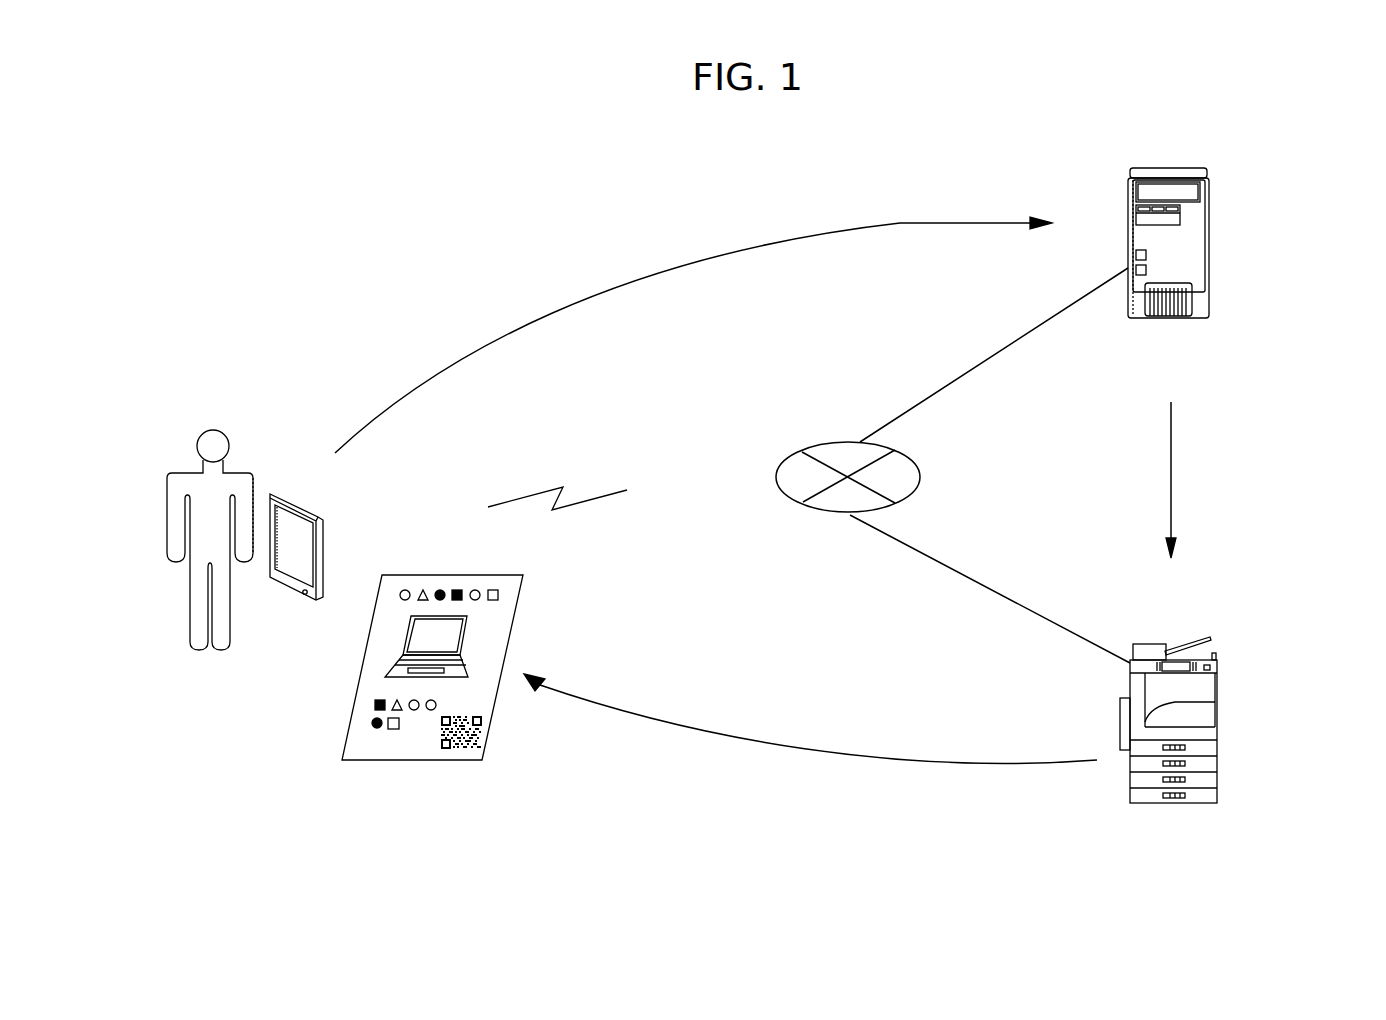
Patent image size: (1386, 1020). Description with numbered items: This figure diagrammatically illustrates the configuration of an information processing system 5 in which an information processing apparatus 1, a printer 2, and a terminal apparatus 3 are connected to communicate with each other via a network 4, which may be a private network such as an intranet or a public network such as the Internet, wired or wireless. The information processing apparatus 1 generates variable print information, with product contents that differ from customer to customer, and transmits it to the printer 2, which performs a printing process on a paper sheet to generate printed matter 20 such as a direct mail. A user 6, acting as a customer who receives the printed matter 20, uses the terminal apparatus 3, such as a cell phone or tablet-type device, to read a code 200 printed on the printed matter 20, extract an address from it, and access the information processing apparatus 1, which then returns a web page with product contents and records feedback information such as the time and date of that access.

The information processing apparatus 1 is at (1208, 218).
The printer 2 is at (1218, 693).
The terminal apparatus 3 is at (320, 548).
The network 4 is at (816, 446).
The information processing system 5 is at (1034, 116).
The user 6 is at (197, 447).
The printed matter 20 is at (513, 627).
The code 200 is at (446, 750).